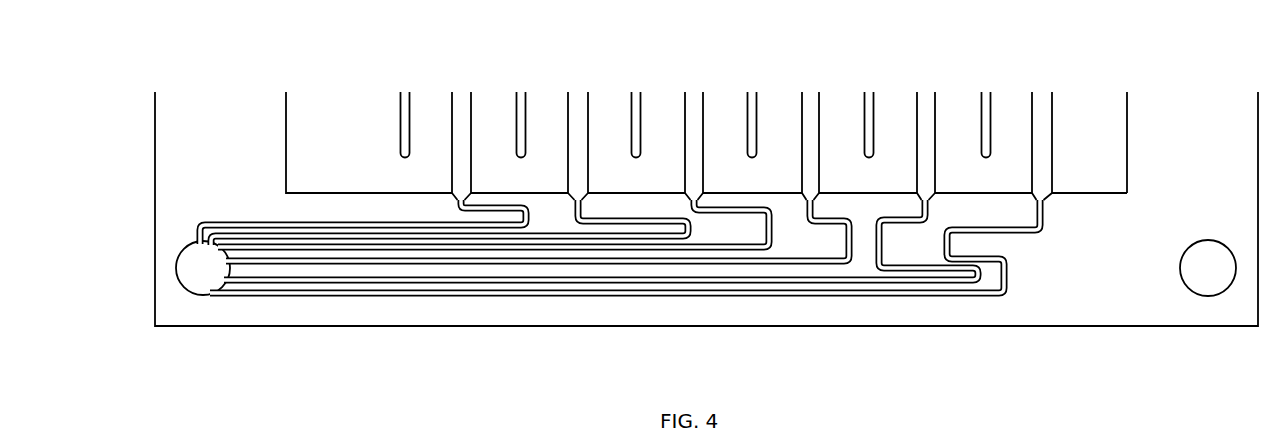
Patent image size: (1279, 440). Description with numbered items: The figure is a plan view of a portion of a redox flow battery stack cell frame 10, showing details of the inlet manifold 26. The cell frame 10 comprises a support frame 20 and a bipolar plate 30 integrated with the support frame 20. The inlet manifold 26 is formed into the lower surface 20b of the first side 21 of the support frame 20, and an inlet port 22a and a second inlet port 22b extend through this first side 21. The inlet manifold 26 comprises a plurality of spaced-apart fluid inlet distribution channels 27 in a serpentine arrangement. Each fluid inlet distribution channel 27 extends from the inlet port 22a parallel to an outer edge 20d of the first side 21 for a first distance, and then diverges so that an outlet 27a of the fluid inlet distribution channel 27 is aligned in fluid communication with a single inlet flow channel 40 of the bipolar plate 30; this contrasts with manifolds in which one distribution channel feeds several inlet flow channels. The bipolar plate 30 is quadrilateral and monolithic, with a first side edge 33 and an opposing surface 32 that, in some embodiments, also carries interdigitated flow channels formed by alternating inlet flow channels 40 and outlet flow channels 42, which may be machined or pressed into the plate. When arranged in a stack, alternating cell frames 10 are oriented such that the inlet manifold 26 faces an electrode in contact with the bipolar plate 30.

The redox flow battery stack cell frame 10 is at (626, 46).
The support frame 20 is at (376, 321).
The opposing surface 20b is at (245, 145).
The outer edge 20d is at (828, 325).
The first side 21 is at (1070, 313).
The inlet port 22a is at (203, 272).
The inlet port 22b is at (1208, 275).
The inlet manifold 26 is at (896, 306).
The fluid inlet distribution channel 27 is at (437, 225).
The outlet 27a is at (1035, 173).
The bipolar plate 30 is at (1128, 107).
The opposing surface 32 is at (362, 145).
The first side edge 33 is at (1087, 195).
The inlet flow channel 40 is at (1040, 87).
The outlet flow channel 42 is at (985, 88).